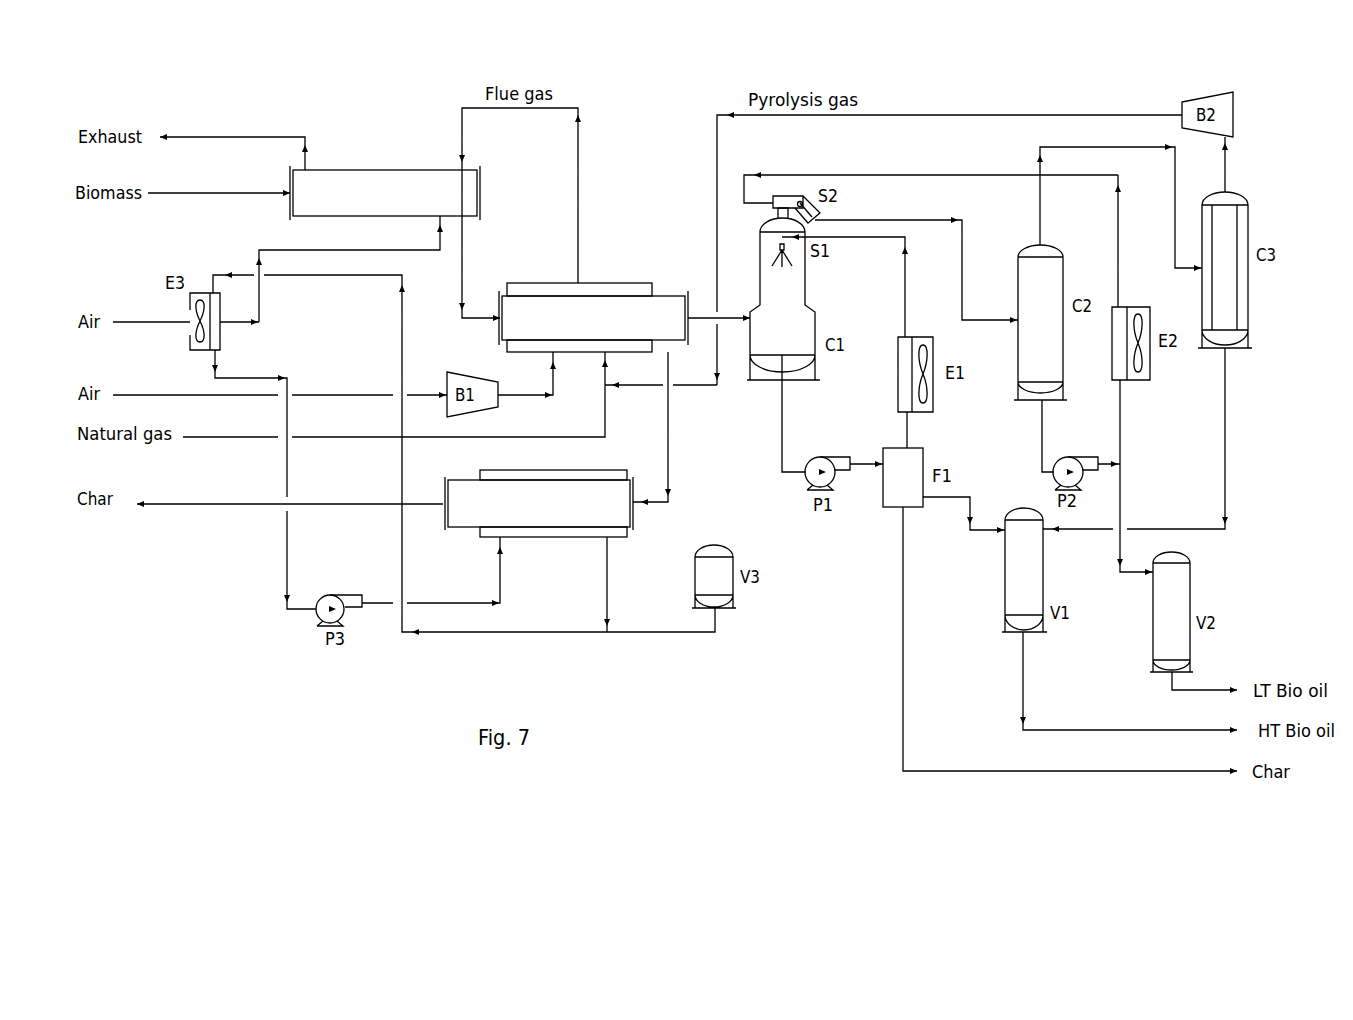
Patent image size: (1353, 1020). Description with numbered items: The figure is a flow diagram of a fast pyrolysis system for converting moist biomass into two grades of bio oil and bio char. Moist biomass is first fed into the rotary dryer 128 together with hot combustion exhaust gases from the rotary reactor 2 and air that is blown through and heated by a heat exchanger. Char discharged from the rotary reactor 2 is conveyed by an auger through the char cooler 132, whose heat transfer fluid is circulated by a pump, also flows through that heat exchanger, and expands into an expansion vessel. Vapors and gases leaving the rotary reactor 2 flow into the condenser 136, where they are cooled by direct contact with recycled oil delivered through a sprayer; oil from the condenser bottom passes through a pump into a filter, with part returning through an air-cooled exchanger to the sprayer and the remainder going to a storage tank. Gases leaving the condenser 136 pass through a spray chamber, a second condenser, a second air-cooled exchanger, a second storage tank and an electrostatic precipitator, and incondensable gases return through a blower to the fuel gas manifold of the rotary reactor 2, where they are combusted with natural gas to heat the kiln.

The rotary dryer 128 is at (435, 180).
The rotary reactor 2 is at (592, 302).
The char cooler 132 is at (578, 490).
The condenser 136 is at (803, 340).